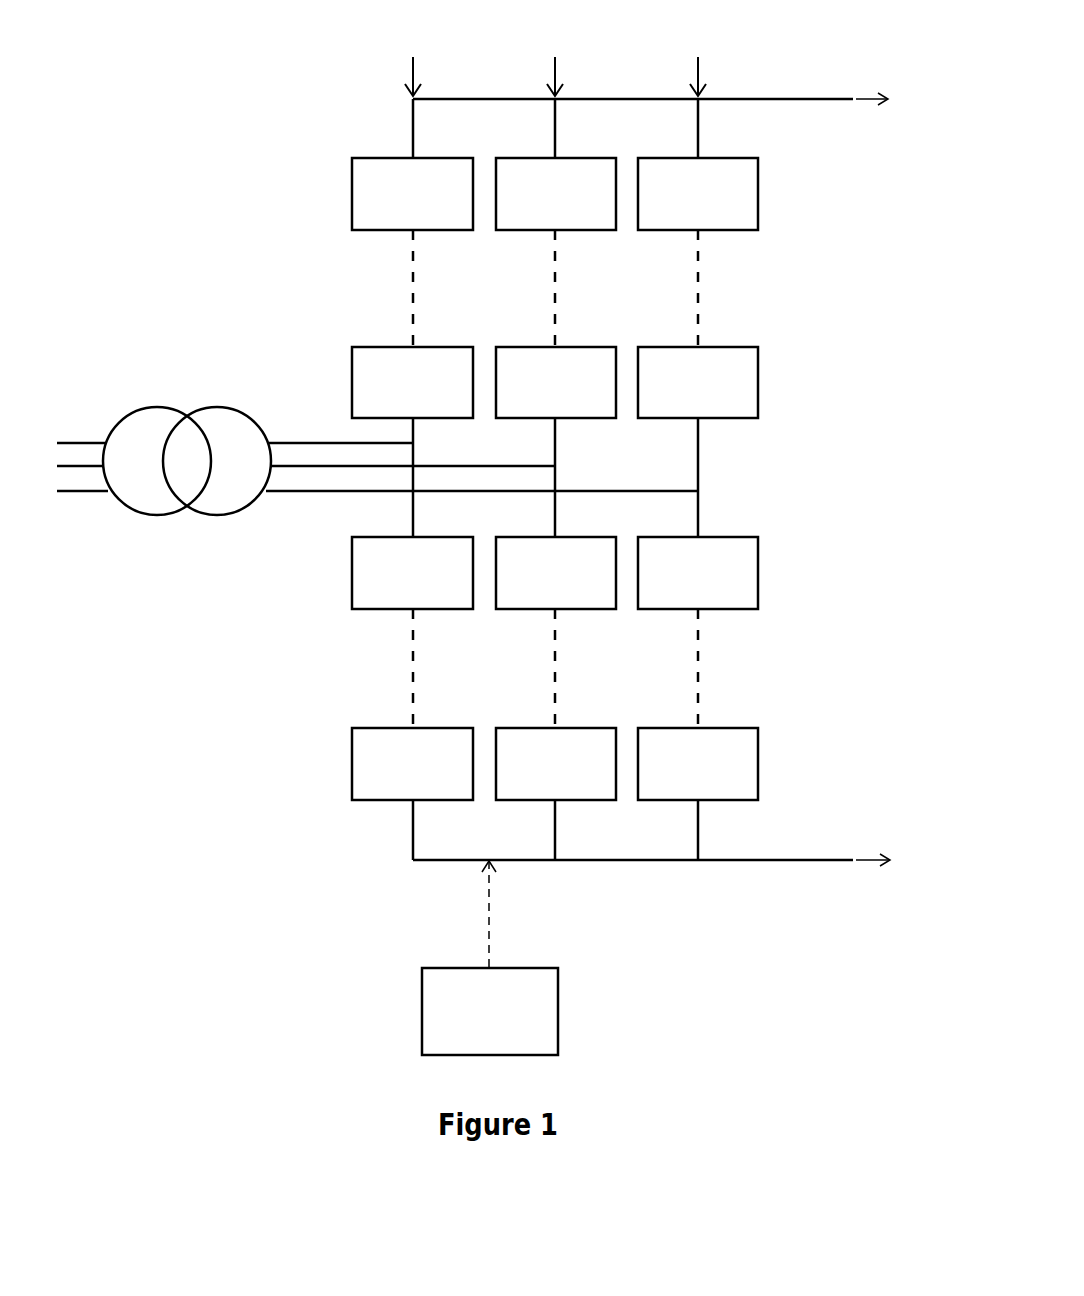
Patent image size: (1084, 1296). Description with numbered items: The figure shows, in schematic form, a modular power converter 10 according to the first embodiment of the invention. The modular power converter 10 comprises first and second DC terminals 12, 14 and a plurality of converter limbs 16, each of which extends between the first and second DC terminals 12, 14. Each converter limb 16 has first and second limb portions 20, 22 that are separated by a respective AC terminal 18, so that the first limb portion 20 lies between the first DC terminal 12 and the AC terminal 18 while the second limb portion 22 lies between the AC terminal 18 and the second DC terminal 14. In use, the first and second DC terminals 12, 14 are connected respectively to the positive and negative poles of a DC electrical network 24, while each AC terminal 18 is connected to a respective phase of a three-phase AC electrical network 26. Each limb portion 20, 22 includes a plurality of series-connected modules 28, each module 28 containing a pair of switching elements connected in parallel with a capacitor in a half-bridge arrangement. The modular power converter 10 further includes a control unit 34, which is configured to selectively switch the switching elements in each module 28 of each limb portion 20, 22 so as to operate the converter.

The modular power converter 10 is at (278, 194).
The first DC terminal 12 is at (703, 105).
The second DC terminal 14 is at (705, 852).
The converter limb 16 is at (555, 54).
The AC terminal 18 is at (417, 443).
The first limb portion 20 is at (405, 130).
The second limb portion 22 is at (403, 830).
The DC electrical network 24 is at (900, 482).
The three-phase AC electrical network 26 is at (187, 400).
The module 28 is at (555, 479).
The control unit 34 is at (490, 958).